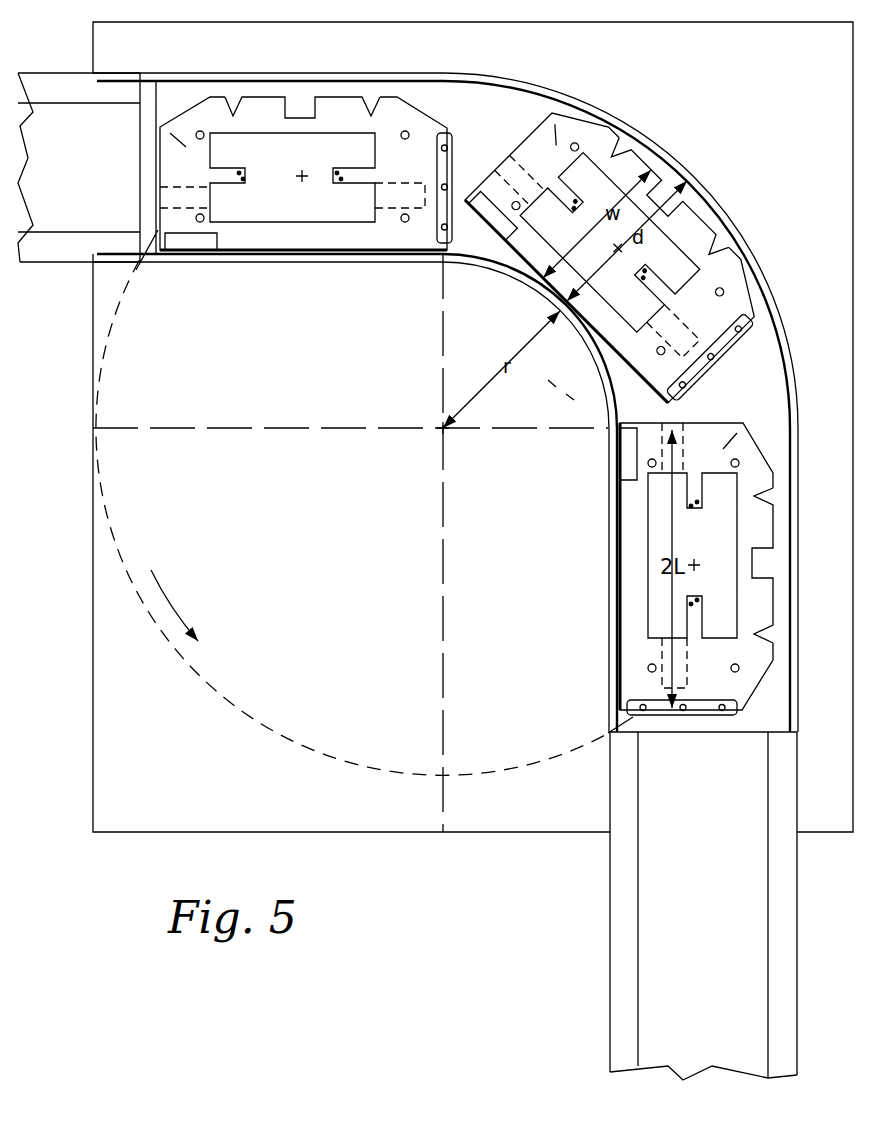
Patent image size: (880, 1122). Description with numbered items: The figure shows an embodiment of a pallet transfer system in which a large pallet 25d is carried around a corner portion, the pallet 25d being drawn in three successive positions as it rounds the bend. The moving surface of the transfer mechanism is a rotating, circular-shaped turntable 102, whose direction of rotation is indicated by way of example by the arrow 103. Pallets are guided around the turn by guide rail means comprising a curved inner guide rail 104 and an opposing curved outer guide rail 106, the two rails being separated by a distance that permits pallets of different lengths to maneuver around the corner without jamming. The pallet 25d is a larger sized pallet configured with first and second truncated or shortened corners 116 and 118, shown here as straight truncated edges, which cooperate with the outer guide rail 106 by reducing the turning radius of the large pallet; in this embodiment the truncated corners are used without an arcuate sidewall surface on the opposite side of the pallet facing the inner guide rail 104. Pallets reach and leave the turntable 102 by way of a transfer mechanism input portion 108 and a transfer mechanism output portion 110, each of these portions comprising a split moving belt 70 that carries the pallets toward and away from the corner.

The split moving belt 70 is at (407, 576).
The turntable 102 is at (360, 695).
The arrow 103 is at (160, 590).
The inner guide rail 104 is at (518, 283).
The outer guide rail 106 is at (723, 213).
The transfer mechanism input portion 108 is at (730, 790).
The transfer mechanism output portion 110 is at (107, 208).
The truncated corner 116 is at (182, 110).
The pallet 25d is at (338, 97).
The truncated corner 118 is at (423, 110).